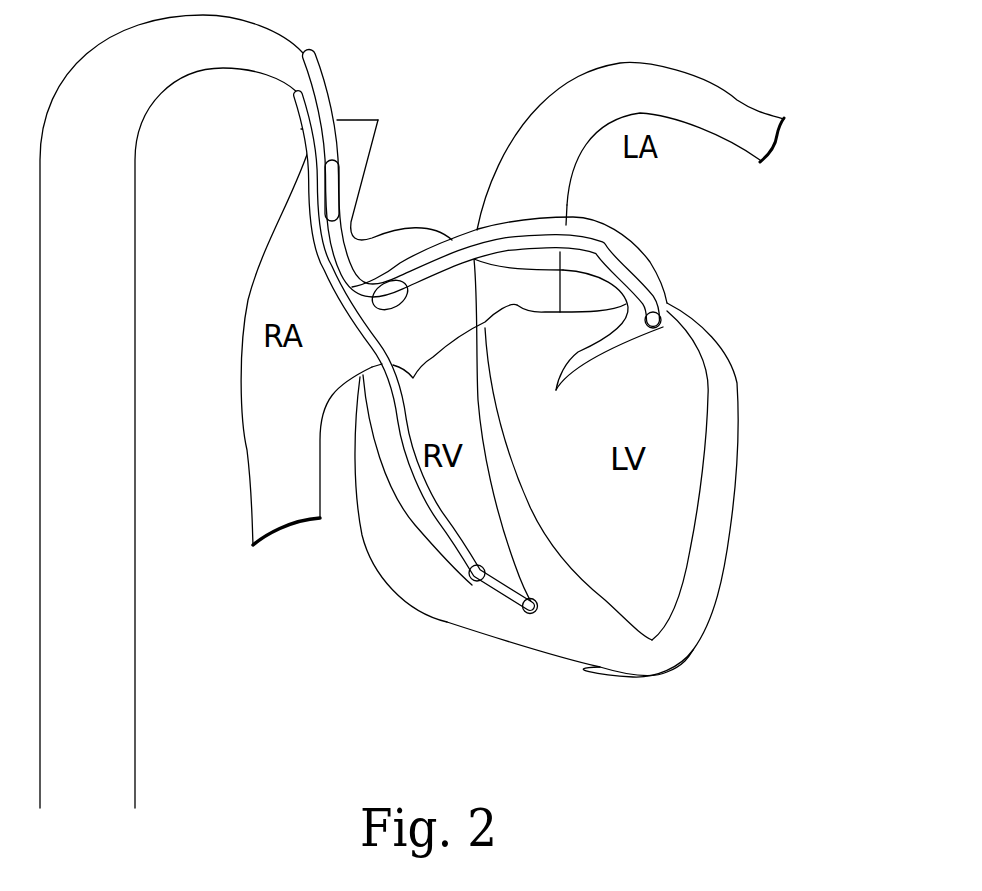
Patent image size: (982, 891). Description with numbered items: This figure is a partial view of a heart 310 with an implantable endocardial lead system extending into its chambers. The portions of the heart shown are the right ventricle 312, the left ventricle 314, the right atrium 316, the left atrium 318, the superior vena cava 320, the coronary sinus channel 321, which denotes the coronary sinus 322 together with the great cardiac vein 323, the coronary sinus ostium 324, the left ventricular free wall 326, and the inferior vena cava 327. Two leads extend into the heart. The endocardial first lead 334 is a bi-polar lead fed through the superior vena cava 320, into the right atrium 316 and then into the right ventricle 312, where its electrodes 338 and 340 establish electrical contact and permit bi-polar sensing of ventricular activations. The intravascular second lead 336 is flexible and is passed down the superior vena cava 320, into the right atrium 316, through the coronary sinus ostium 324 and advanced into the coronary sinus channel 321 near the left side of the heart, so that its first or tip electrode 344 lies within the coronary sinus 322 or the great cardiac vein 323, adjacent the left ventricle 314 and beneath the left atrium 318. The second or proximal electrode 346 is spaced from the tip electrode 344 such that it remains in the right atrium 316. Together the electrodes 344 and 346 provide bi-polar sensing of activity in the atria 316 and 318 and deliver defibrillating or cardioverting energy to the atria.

The heart 310 is at (813, 227).
The right ventricle 312 is at (421, 527).
The left ventricle 314 is at (646, 625).
The right atrium 316 is at (272, 268).
The left atrium 318 is at (607, 224).
The superior vena cava 320 is at (357, 143).
The coronary sinus channel 321 is at (528, 212).
The coronary sinus 322 is at (465, 236).
The great cardiac vein 323 is at (668, 297).
The coronary sinus ostium 324 is at (398, 308).
The left ventricular free wall 326 is at (710, 323).
The inferior vena cava 327 is at (270, 497).
The endocardial first lead 334 is at (135, 670).
The intravascular second lead 336 is at (40, 542).
The electrode 338 is at (526, 614).
The electrode 340 is at (476, 582).
The first or tip electrode 344 is at (661, 328).
The second or proximal electrode 346 is at (326, 203).